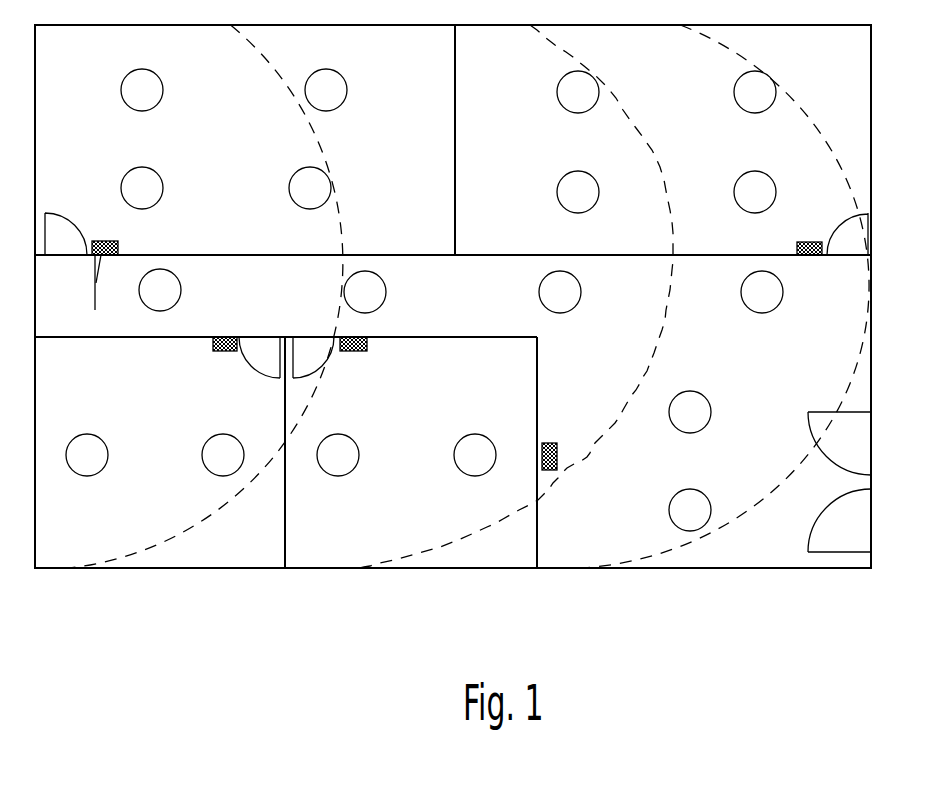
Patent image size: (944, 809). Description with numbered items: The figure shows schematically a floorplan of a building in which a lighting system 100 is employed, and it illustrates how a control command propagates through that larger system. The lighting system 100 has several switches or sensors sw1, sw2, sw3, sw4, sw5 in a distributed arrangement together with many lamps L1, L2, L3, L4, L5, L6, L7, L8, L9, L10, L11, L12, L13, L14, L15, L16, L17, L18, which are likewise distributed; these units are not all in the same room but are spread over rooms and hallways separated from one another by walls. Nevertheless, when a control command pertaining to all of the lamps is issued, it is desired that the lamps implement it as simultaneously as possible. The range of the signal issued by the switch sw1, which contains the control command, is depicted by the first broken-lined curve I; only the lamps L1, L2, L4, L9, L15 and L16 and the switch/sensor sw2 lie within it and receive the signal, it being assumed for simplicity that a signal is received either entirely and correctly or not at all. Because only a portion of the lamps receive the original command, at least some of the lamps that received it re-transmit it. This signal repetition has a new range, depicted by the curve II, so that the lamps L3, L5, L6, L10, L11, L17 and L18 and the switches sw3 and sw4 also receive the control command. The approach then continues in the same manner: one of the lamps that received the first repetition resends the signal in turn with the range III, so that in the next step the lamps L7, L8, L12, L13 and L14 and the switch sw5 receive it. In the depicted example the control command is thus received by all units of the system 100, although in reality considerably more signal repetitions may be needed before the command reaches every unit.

The lighting system 100 is at (345, 603).
The first broken-lined curve I is at (158, 543).
The curve II is at (441, 547).
The range III is at (690, 545).
The switch sw1 is at (104, 233).
The switch/sensor sw2 is at (220, 360).
The switch sw3 is at (350, 360).
The switch sw4 is at (560, 439).
The switch sw5 is at (806, 233).
The lamp L1 is at (142, 90).
The lamp L2 is at (142, 188).
The lamp L3 is at (326, 90).
The lamp L4 is at (310, 188).
The lamp L5 is at (578, 92).
The lamp L6 is at (578, 192).
The lamp L7 is at (755, 92).
The lamp L8 is at (755, 192).
The lamp L9 is at (160, 290).
The lamp L10 is at (365, 292).
The lamp L11 is at (560, 292).
The lamp L12 is at (762, 292).
The lamp L13 is at (690, 412).
The lamp L14 is at (690, 510).
The lamp L15 is at (87, 455).
The lamp L16 is at (223, 455).
The lamp L17 is at (338, 455).
The lamp L18 is at (475, 455).